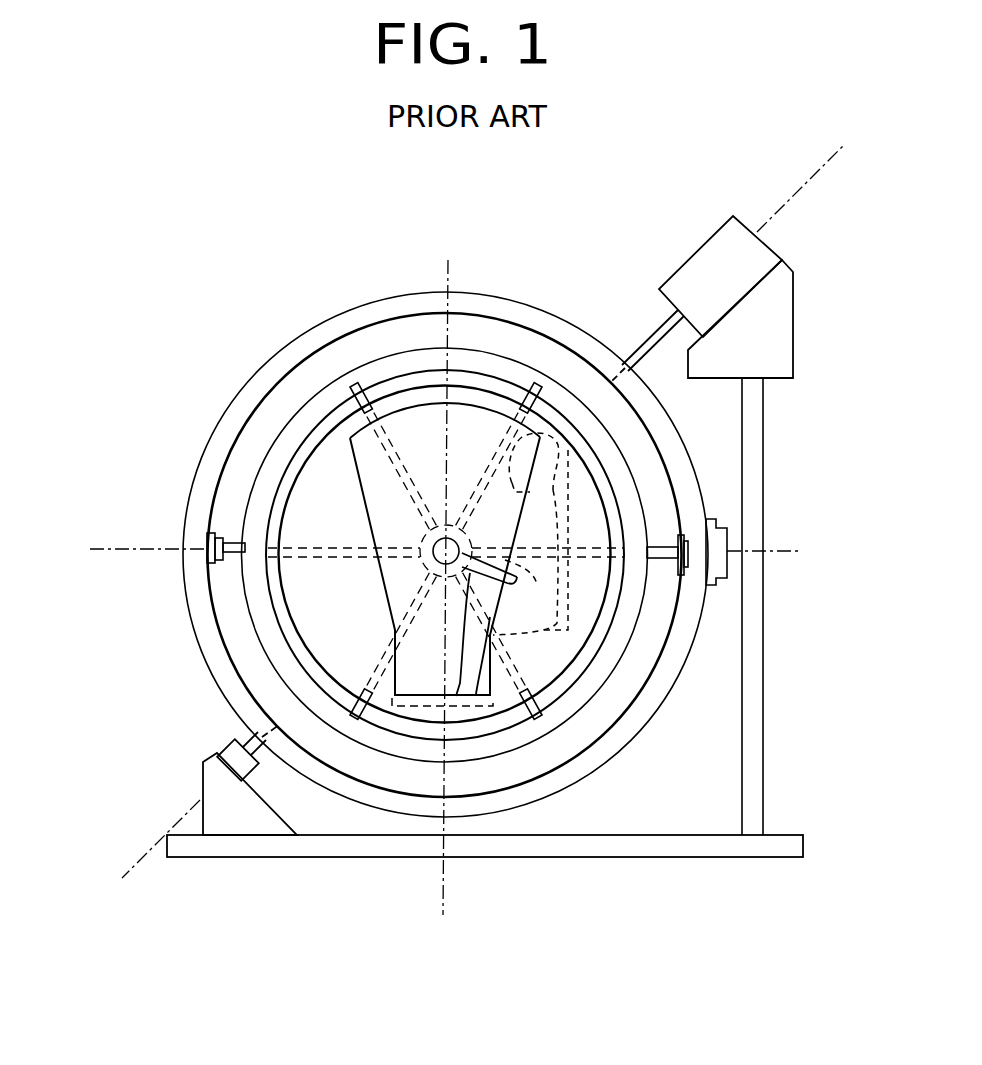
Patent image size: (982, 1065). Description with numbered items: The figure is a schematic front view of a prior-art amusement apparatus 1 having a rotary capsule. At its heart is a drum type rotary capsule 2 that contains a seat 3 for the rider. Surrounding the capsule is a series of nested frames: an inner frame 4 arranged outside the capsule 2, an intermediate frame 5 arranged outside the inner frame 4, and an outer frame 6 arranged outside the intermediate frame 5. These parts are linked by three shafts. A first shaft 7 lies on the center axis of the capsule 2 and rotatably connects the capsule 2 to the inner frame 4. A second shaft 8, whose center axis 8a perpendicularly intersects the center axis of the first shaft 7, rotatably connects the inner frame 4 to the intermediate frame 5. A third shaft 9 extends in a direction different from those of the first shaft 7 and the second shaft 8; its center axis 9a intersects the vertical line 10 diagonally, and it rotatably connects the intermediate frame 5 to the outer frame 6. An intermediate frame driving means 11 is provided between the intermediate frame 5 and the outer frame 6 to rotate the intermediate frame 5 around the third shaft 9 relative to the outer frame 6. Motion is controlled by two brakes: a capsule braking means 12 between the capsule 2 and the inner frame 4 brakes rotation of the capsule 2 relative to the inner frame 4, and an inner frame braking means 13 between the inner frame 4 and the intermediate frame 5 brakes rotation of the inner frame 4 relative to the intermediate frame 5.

The amusement apparatus 1 is at (330, 268).
The drum type rotary capsule 2 is at (312, 455).
The seat 3 is at (585, 630).
The inner frame 4 is at (260, 483).
The intermediate frame 5 is at (215, 655).
The outer frame 6 is at (752, 630).
The first shaft 7 is at (423, 537).
The second shaft 8 is at (228, 562).
The center axis of the second shaft 8a is at (100, 548).
The third shaft 9 is at (648, 338).
The center axis of the third shaft 9a is at (822, 170).
The vertical line 10 is at (452, 884).
The intermediate frame driving means 11 is at (712, 256).
The capsule braking means 12 is at (416, 562).
The inner frame braking means 13 is at (718, 590).